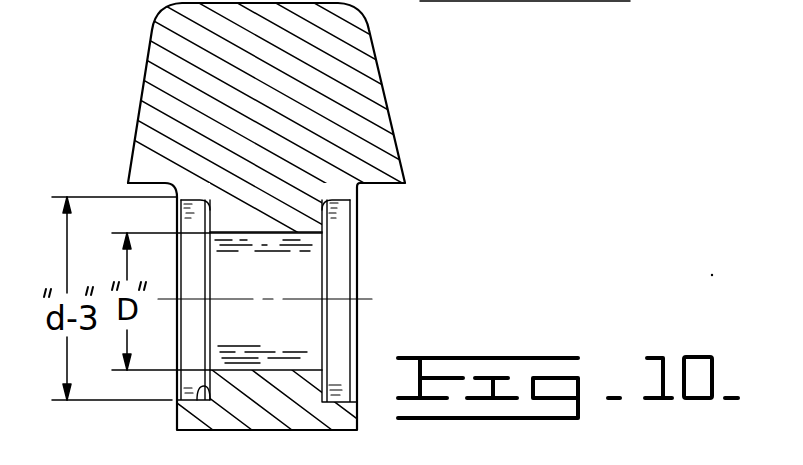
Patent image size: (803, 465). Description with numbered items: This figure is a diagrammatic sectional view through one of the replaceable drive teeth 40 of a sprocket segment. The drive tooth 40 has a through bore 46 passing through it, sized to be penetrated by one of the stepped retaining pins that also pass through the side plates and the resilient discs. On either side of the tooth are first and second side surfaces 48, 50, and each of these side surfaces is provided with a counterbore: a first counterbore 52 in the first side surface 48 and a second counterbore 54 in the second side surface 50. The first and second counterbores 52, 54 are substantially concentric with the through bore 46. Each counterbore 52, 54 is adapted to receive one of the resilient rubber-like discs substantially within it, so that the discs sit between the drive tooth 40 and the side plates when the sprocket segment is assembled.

The drive tooth 40 is at (385, 63).
The through bore 46 is at (268, 240).
The first side surface 48 is at (358, 417).
The second side surface 50 is at (173, 417).
The first counterbore 52 is at (358, 220).
The second counterbore 54 is at (204, 400).